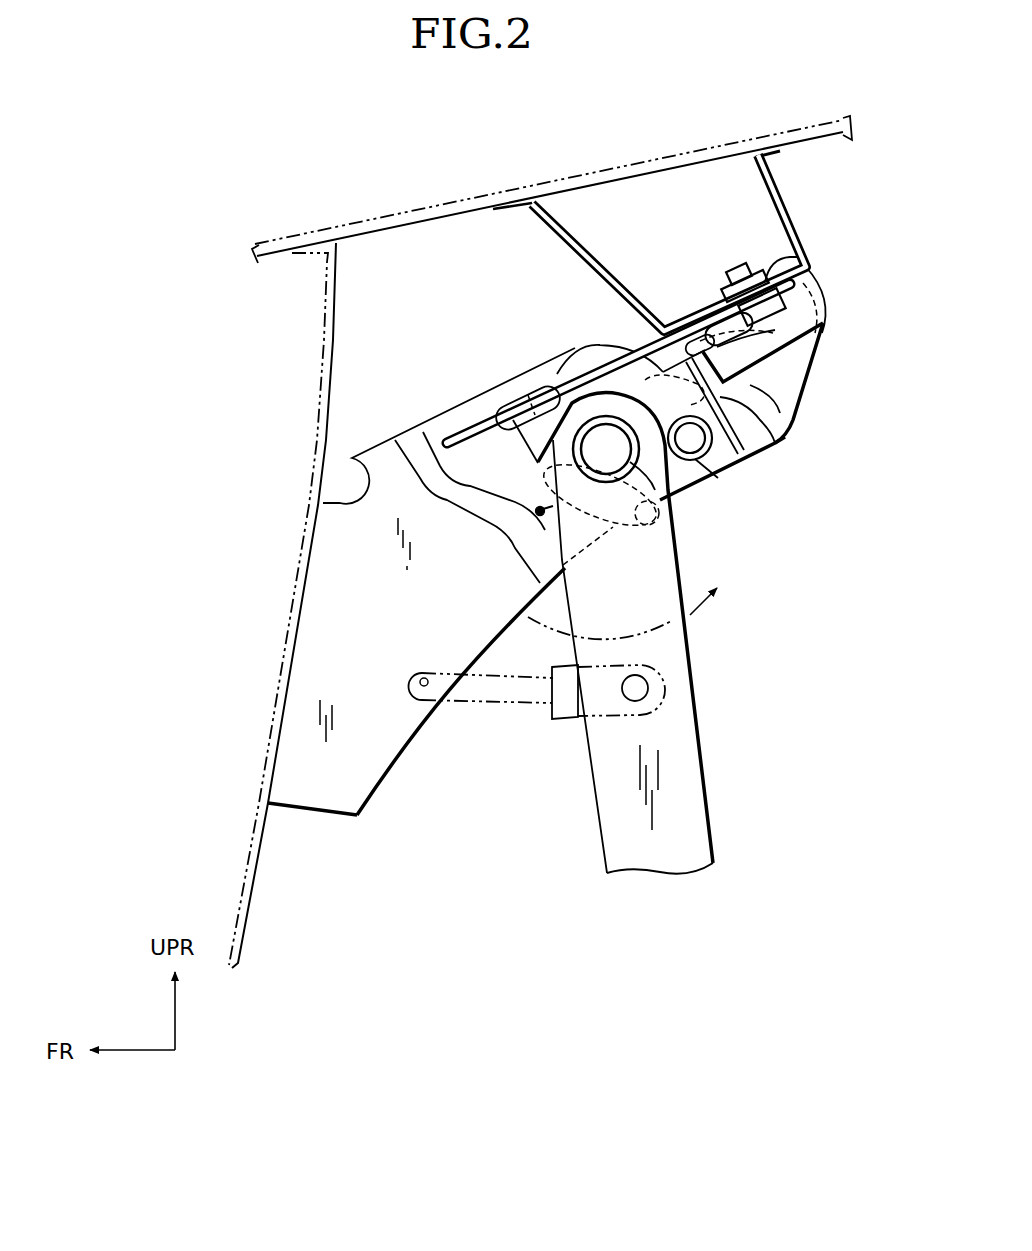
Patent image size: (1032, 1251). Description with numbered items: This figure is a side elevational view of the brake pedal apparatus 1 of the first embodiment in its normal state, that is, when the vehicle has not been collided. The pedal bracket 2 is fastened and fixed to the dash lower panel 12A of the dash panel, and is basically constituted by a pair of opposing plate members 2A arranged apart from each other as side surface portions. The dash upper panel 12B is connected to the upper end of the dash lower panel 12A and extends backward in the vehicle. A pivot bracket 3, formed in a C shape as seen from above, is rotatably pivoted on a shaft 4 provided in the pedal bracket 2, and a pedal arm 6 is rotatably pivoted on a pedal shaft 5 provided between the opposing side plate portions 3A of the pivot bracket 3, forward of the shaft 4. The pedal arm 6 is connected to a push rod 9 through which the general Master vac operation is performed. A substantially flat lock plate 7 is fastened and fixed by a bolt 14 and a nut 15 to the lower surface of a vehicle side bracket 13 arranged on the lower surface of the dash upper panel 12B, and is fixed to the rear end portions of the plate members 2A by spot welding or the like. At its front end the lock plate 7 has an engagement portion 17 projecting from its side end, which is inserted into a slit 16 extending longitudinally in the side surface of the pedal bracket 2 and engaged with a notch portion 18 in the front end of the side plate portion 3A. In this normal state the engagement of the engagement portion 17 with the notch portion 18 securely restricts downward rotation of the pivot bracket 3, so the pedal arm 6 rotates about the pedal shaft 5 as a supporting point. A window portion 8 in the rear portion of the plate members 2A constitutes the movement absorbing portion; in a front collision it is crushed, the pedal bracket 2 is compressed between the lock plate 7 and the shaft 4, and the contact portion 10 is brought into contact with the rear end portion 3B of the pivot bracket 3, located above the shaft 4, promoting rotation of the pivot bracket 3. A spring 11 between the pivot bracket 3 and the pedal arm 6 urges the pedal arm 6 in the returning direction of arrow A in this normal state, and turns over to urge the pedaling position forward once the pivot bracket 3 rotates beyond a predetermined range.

The brake pedal apparatus 1 is at (850, 373).
The pedal bracket 2 is at (400, 762).
The plate member 2A is at (318, 806).
The pivot bracket 3 is at (740, 462).
The side plate portion 3A is at (592, 350).
The rear end portion 3B is at (778, 445).
The shaft 4 is at (727, 465).
The pedal shaft 5 is at (692, 488).
The pedal arm 6 is at (706, 790).
The lock plate 7 is at (572, 360).
The window portion 8 is at (755, 388).
The push rod 9 is at (487, 704).
The contact portion 10 is at (795, 352).
The spring 11 is at (613, 545).
The dash lower panel 12A is at (240, 923).
The dash upper panel 12B is at (660, 162).
The vehicle side bracket 13 is at (805, 222).
The bolt 14 is at (828, 284).
The nut 15 is at (772, 263).
The slit 16 is at (450, 418).
The engagement portion 17 is at (492, 392).
The notch portion 18 is at (533, 392).